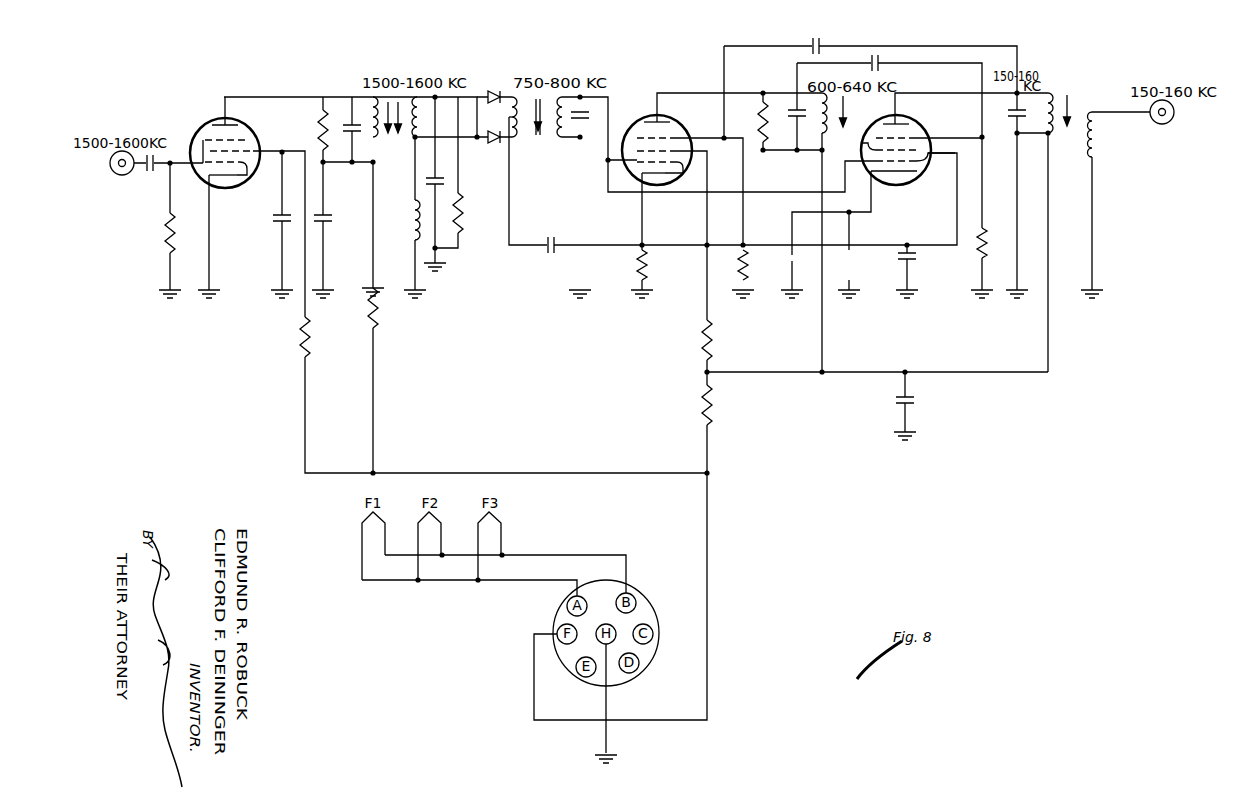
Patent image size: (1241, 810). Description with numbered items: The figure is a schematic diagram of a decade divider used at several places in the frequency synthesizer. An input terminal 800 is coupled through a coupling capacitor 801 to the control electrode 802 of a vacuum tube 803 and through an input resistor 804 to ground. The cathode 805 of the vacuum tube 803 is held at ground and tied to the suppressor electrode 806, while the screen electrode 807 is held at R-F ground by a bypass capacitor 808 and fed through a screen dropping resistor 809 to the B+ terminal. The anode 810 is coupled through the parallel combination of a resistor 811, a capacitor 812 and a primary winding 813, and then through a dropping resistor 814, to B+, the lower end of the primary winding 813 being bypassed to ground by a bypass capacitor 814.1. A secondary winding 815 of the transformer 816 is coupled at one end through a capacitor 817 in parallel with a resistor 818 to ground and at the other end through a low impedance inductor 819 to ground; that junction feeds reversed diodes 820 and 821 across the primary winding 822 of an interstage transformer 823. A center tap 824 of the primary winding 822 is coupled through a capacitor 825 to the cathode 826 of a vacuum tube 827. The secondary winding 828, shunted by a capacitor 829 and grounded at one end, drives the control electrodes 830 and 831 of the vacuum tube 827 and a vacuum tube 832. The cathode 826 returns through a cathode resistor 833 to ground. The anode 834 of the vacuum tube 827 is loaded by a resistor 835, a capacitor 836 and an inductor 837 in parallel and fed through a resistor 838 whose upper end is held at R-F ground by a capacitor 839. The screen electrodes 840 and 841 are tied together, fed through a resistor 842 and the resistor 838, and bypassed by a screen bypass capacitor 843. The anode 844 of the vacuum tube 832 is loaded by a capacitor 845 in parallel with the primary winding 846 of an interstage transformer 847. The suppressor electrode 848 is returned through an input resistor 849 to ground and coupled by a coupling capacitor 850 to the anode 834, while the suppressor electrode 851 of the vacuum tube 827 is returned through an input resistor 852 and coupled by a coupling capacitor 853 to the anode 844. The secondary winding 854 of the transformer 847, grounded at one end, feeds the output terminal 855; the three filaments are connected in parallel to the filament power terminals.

The input terminal 800 is at (118, 176).
The coupling capacitor 801 is at (161, 158).
The control electrode 802 is at (250, 168).
The vacuum tube 803 is at (240, 138).
The input resistor 804 is at (172, 213).
The cathode 805 is at (223, 177).
The suppressor electrode 806 is at (238, 136).
The screen electrode 807 is at (253, 150).
The bypass capacitor 808 is at (282, 222).
The screen dropping resistor 809 is at (305, 330).
The anode 810 is at (217, 120).
The resistor 811 is at (318, 112).
The capacitor 812 is at (350, 122).
The primary winding 813 is at (368, 112).
The dropping resistor 814 is at (375, 327).
The bypass capacitor 814.1 is at (331, 215).
The secondary winding 815 is at (400, 126).
The transformer 816 is at (419, 80).
The capacitor 817 is at (448, 178).
The resistor 818 is at (463, 210).
The low impedance inductor 819 is at (415, 203).
The reversed diode 820 is at (498, 93).
The reversed diode 821 is at (500, 118).
The primary winding 822 is at (514, 97).
The interstage transformer 823 is at (565, 74).
The center tap 824 is at (509, 143).
The capacitor 825 is at (555, 240).
The cathode 826 is at (660, 175).
The vacuum tube 827 is at (648, 114).
The secondary winding 828 is at (558, 137).
The capacitor 829 is at (590, 114).
The control electrode 830 is at (693, 165).
The control electrode 831 is at (918, 172).
The vacuum tube 832 is at (912, 135).
The cathode resistor 833 is at (643, 270).
The anode 834 is at (669, 116).
The resistor 835 is at (763, 120).
The capacitor 836 is at (790, 107).
The inductor 837 is at (848, 113).
The resistor 838 is at (710, 421).
The capacitor 839 is at (912, 397).
The screen electrode 840 is at (700, 148).
The screen electrode 841 is at (862, 144).
The resistor 842 is at (710, 350).
The screen bypass capacitor 843 is at (913, 257).
The anode 844 is at (898, 114).
The capacitor 845 is at (1020, 100).
The primary winding 846 is at (1055, 92).
The interstage transformer 847 is at (1095, 102).
The suppressor or second control electrode 848 is at (916, 137).
The input resistor 849 is at (992, 240).
The coupling capacitor 850 is at (880, 58).
The suppressor or second control electrode 851 is at (637, 137).
The input resistor 852 is at (745, 275).
The coupling capacitor 853 is at (818, 44).
The secondary winding 854 is at (1088, 143).
The output terminal 855 is at (1173, 118).